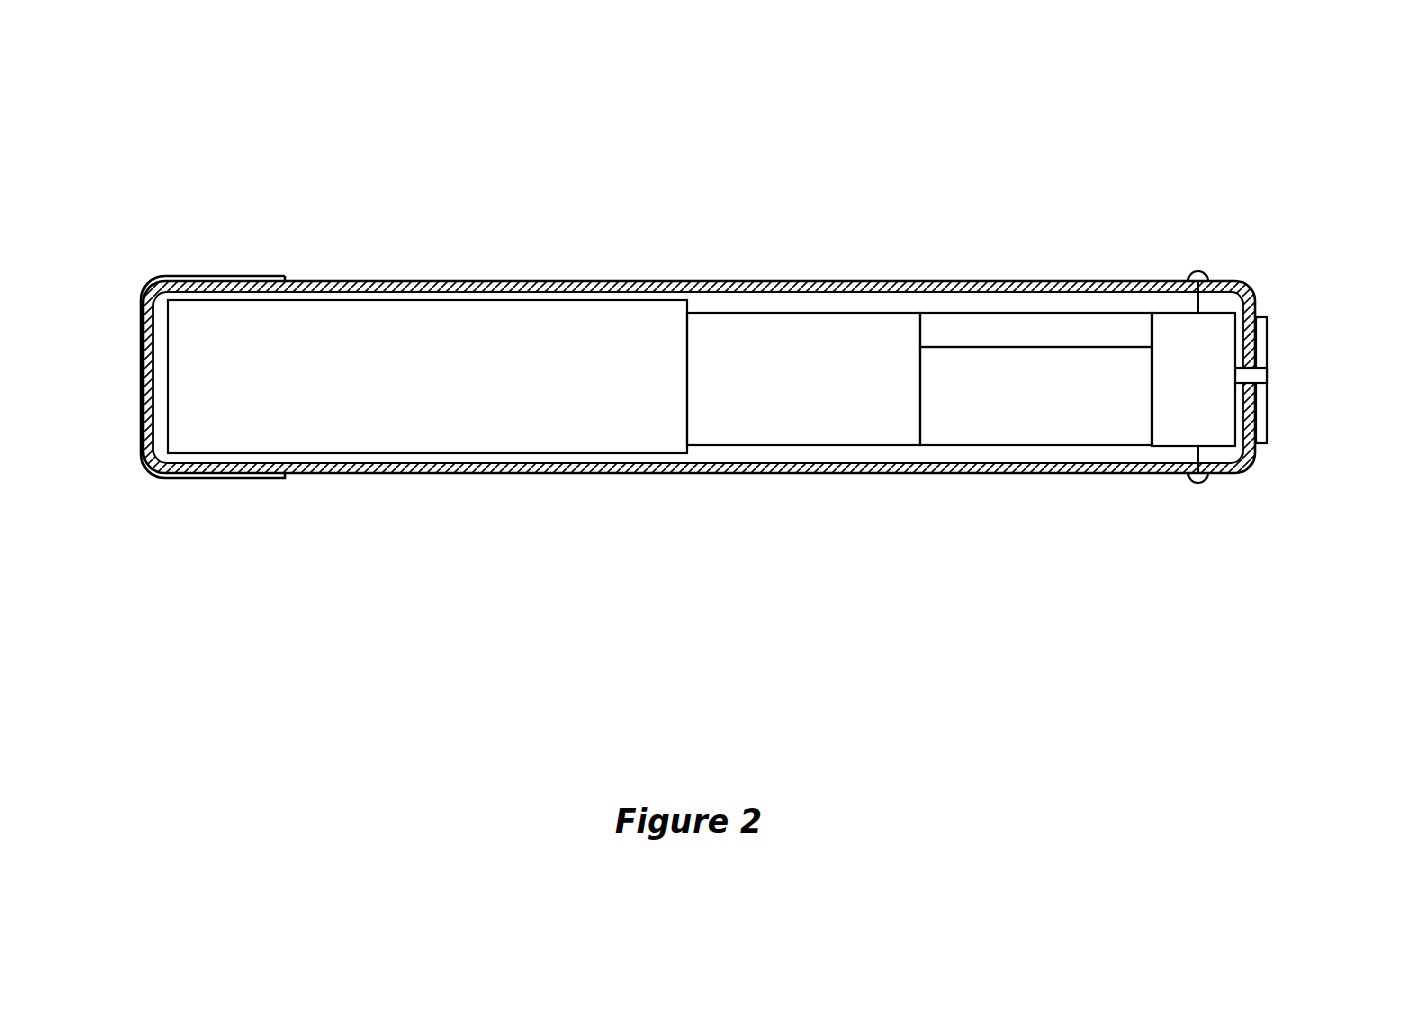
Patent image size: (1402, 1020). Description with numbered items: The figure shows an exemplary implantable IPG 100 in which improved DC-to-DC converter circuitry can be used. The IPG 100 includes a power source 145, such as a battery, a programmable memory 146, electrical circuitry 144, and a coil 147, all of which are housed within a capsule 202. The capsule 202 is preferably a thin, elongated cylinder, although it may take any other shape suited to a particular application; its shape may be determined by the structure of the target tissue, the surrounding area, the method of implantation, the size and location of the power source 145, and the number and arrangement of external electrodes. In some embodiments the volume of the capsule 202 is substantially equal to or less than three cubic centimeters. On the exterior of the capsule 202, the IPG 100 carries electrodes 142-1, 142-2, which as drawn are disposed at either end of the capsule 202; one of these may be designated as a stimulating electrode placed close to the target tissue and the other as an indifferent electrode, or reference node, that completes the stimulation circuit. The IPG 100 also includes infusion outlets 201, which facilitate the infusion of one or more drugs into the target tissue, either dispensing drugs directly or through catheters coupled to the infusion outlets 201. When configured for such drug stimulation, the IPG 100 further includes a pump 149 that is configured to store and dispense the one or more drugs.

The implantable IPG 100 is at (701, 305).
The capsule 202 is at (598, 281).
The infusion outlets 201 is at (1200, 270).
The electrode 142-1 is at (140, 378).
The electrode 142-2 is at (1265, 360).
The power source 145 is at (427, 376).
The programmable memory 146 is at (803, 379).
The coil 147 is at (1036, 330).
The electrical circuitry 144 is at (1036, 396).
The pump 149 is at (1193, 379).